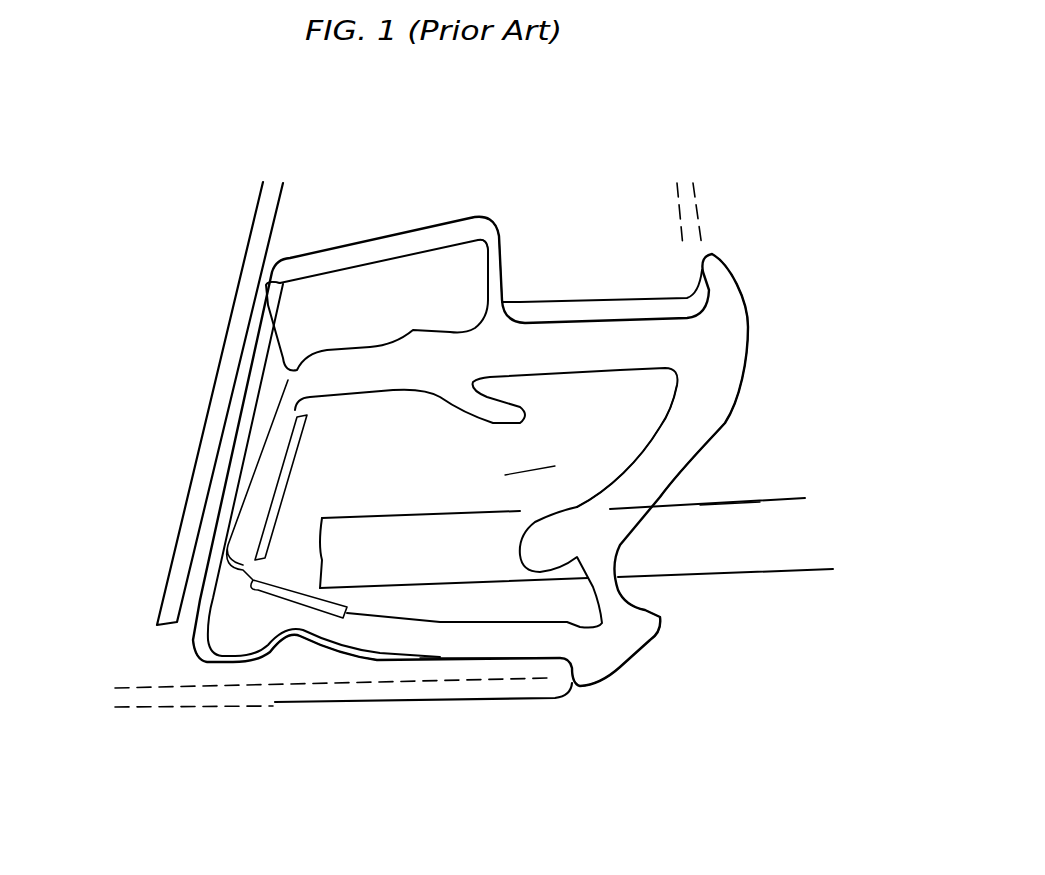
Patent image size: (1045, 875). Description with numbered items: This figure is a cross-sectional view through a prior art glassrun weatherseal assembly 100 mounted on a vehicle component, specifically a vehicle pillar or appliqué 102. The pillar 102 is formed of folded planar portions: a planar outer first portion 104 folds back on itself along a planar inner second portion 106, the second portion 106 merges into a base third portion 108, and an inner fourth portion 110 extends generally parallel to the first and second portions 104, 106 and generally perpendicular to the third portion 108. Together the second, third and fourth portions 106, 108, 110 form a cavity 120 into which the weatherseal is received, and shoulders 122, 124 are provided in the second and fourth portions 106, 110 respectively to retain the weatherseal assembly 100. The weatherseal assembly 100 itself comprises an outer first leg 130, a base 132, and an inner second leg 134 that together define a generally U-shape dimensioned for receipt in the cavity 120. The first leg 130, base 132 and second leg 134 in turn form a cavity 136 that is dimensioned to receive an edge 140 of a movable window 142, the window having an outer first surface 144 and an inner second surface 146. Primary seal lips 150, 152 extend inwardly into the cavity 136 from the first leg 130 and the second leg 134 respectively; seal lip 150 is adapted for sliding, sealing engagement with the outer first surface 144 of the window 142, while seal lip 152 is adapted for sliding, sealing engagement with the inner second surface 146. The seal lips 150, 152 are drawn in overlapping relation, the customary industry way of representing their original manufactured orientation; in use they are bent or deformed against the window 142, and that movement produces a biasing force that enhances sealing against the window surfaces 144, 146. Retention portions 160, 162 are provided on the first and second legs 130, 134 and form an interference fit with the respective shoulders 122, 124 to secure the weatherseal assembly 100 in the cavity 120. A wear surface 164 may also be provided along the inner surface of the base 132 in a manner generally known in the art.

The weatherseal assembly 100 is at (782, 362).
The vehicle pillar or appliqué 102 is at (158, 718).
The first portion 104 is at (272, 697).
The second portion 106 is at (440, 668).
The third portion 108 is at (237, 425).
The fourth portion 110 is at (513, 317).
The cavity 120 is at (310, 331).
The shoulder 122 is at (273, 655).
The shoulder 124 is at (500, 250).
The first leg 130 is at (480, 643).
The base 132 is at (250, 507).
The second leg 134 is at (560, 360).
The cavity 136 is at (535, 456).
The edge 140 is at (416, 504).
The movable window 142 is at (822, 533).
The first surface 144 is at (803, 578).
The second surface 146 is at (803, 497).
The seal lip 150 is at (583, 570).
The seal lip 152 is at (690, 457).
The retention portion 160 is at (230, 638).
The retention portion 162 is at (455, 312).
The wear surface 164 is at (278, 507).